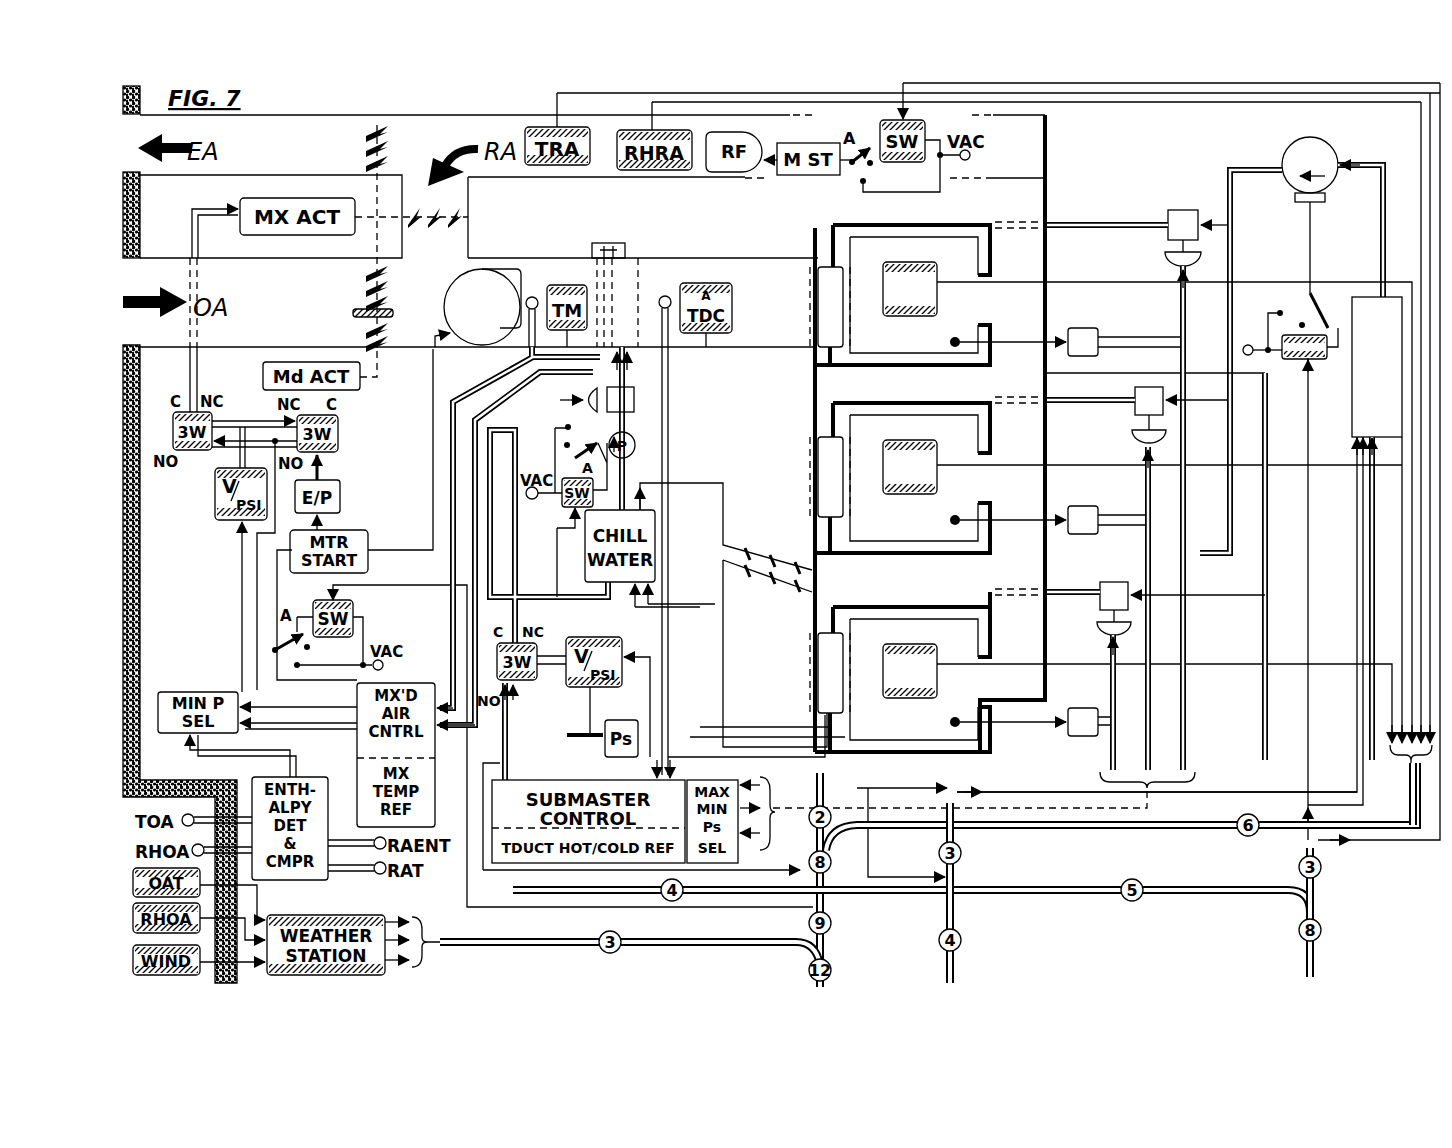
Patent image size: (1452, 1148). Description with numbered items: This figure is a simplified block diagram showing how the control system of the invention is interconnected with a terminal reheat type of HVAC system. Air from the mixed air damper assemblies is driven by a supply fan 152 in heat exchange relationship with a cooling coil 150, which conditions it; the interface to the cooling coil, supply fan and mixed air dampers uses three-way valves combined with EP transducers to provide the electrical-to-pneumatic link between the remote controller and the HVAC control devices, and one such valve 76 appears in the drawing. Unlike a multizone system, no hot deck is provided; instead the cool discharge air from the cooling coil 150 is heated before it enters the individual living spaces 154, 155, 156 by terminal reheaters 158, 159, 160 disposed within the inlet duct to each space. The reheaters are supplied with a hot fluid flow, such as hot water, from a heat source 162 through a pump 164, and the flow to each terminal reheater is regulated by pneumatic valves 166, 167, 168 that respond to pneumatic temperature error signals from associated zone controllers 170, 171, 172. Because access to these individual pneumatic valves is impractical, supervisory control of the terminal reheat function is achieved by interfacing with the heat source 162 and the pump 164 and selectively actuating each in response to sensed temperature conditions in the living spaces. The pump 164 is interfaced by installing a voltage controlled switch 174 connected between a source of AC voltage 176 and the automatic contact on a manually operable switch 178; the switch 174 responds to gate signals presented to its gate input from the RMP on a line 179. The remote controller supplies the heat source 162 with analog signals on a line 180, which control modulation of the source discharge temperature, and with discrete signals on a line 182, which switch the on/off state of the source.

The valve 76 is at (611, 384).
The cooling coil 150 is at (632, 268).
The supply fan 152 is at (492, 280).
The living space 154 is at (902, 295).
The living space 155 is at (902, 478).
The living space 156 is at (902, 672).
The terminal reheater 158 is at (820, 265).
The terminal reheater 159 is at (815, 452).
The terminal reheater 160 is at (815, 638).
The heat source 162 is at (1391, 299).
The pump 164 is at (1330, 149).
The pneumatic valve 166 is at (1182, 210).
The pneumatic valve 167 is at (1137, 416).
The pneumatic valve 168 is at (1101, 603).
The zone controller 170 is at (1090, 329).
The zone controller 171 is at (1080, 507).
The zone controller 172 is at (1090, 707).
The voltage controlled switch 174 is at (1295, 361).
The source of AC voltage 176 is at (1243, 349).
The manually operable switch 178 is at (1323, 262).
The line 179 is at (1308, 579).
The line 180 is at (1356, 493).
The line 182 is at (1362, 519).